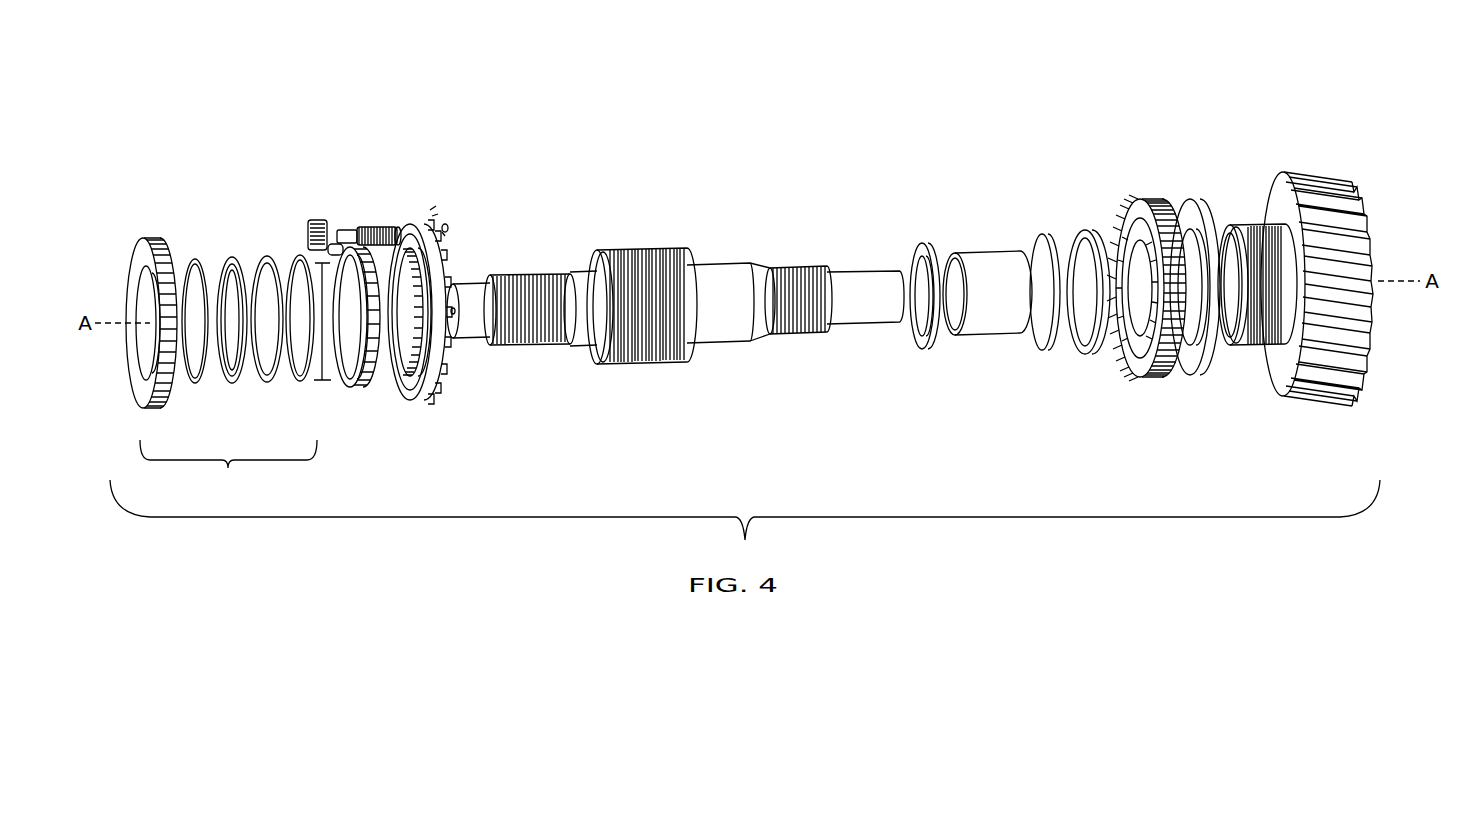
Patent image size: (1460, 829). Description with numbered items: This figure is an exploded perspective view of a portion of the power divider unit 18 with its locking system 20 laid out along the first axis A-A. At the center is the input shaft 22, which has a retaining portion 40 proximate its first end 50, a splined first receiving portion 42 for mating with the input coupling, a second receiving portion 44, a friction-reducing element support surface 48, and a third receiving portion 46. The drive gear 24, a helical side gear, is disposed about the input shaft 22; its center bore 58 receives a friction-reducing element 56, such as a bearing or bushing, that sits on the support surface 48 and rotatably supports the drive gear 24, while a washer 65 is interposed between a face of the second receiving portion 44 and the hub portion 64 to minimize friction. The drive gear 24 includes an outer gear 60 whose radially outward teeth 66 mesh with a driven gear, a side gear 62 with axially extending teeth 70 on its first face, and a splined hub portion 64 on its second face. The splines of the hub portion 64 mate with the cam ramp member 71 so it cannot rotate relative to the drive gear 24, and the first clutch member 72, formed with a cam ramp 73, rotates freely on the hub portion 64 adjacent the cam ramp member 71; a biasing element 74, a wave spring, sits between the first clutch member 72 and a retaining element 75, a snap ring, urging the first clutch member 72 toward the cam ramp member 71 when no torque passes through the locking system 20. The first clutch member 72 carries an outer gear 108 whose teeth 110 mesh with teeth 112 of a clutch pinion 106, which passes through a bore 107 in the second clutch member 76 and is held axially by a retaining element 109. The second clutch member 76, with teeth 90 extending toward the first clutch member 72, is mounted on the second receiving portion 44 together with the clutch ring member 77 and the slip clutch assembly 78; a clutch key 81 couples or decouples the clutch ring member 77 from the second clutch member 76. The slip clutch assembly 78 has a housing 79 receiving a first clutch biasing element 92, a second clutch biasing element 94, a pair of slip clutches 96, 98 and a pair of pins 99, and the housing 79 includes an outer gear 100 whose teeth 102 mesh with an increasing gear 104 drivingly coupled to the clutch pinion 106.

The power divider unit 18 is at (454, 90).
The locking system 20 is at (228, 283).
The input shaft 22 is at (675, 288).
The drive gear 24 is at (1358, 243).
The retaining portion 40 is at (480, 329).
The first receiving portion 42 is at (540, 276).
The second receiving portion 44 is at (640, 250).
The third receiving portion 46 is at (795, 268).
The friction-reducing element support surface 48 is at (745, 265).
The first end 50 is at (455, 337).
The friction-reducing element 56 is at (990, 252).
The center bore 58 is at (1249, 272).
The outer gear 60 is at (1335, 185).
The side gear 62 is at (1369, 289).
The hub portion 64 is at (1242, 225).
The washer 65 is at (918, 247).
The teeth 66 is at (1357, 363).
The teeth 70 is at (1380, 262).
The cam ramp member 71 is at (1190, 200).
The first clutch member 72 is at (1133, 286).
The cam ramp 73 is at (1155, 385).
The biasing element 74 is at (1082, 230).
The retaining element 75 is at (1040, 236).
The second clutch member 76 is at (445, 322).
The clutch ring member 77 is at (355, 385).
The slip clutch assembly 78 is at (228, 472).
The housing 79 is at (151, 305).
The clutch key 81 is at (335, 244).
The teeth 90 is at (430, 396).
The first clutch biasing element 92 is at (192, 256).
The second clutch biasing element 94 is at (300, 252).
The slip clutch 96 is at (231, 255).
The slip clutch 98 is at (265, 254).
The pins 99 is at (324, 380).
The outer gear 100 is at (167, 305).
The teeth 102 is at (160, 395).
The increasing gear 104 is at (318, 220).
The clutch pinion 106 is at (402, 194).
The bore 107 is at (432, 212).
The outer gear 108 is at (1152, 200).
The retaining element 109 is at (450, 228).
The teeth 110 is at (1138, 375).
The teeth 112 is at (400, 232).